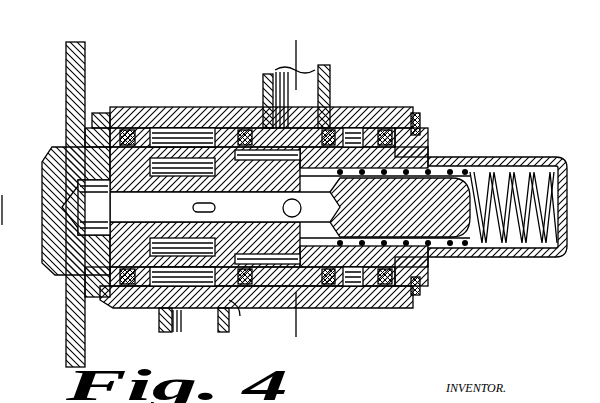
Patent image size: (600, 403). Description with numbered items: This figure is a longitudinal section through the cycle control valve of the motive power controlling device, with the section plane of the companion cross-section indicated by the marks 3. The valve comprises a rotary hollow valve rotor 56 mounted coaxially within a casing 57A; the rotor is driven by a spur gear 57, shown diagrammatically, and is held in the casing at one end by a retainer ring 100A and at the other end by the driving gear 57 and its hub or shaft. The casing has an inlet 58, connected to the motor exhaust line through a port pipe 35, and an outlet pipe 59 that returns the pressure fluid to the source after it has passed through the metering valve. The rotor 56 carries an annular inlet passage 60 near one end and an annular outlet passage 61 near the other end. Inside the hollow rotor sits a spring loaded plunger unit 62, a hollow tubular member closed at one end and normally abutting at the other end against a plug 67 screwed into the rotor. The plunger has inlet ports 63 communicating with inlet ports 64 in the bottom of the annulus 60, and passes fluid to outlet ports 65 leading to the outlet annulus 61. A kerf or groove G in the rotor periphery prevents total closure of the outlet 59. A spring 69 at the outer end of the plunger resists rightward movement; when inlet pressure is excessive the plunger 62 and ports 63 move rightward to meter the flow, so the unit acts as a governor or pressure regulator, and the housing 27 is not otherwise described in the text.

The housing 27 is at (183, 98).
The port pipe 35 is at (160, 320).
The valve rotor 56 is at (113, 107).
The spur gear 57 is at (71, 43).
The casing 57A is at (397, 113).
The inlet 58 is at (238, 308).
The outlet pipe 59 is at (307, 72).
The annular inlet passage 60 is at (213, 108).
The annular outlet passage 61 is at (328, 93).
The spring loaded plunger unit 62 is at (408, 215).
The inlet ports 63 is at (193, 208).
The inlet ports 64 is at (181, 287).
The outlet ports 65 is at (283, 208).
The plug 67 is at (45, 262).
The spring 69 is at (515, 162).
The retainer ring 100A is at (420, 122).
The section line 3- 3 is at (292, 53).
The kerf or groove G is at (303, 329).